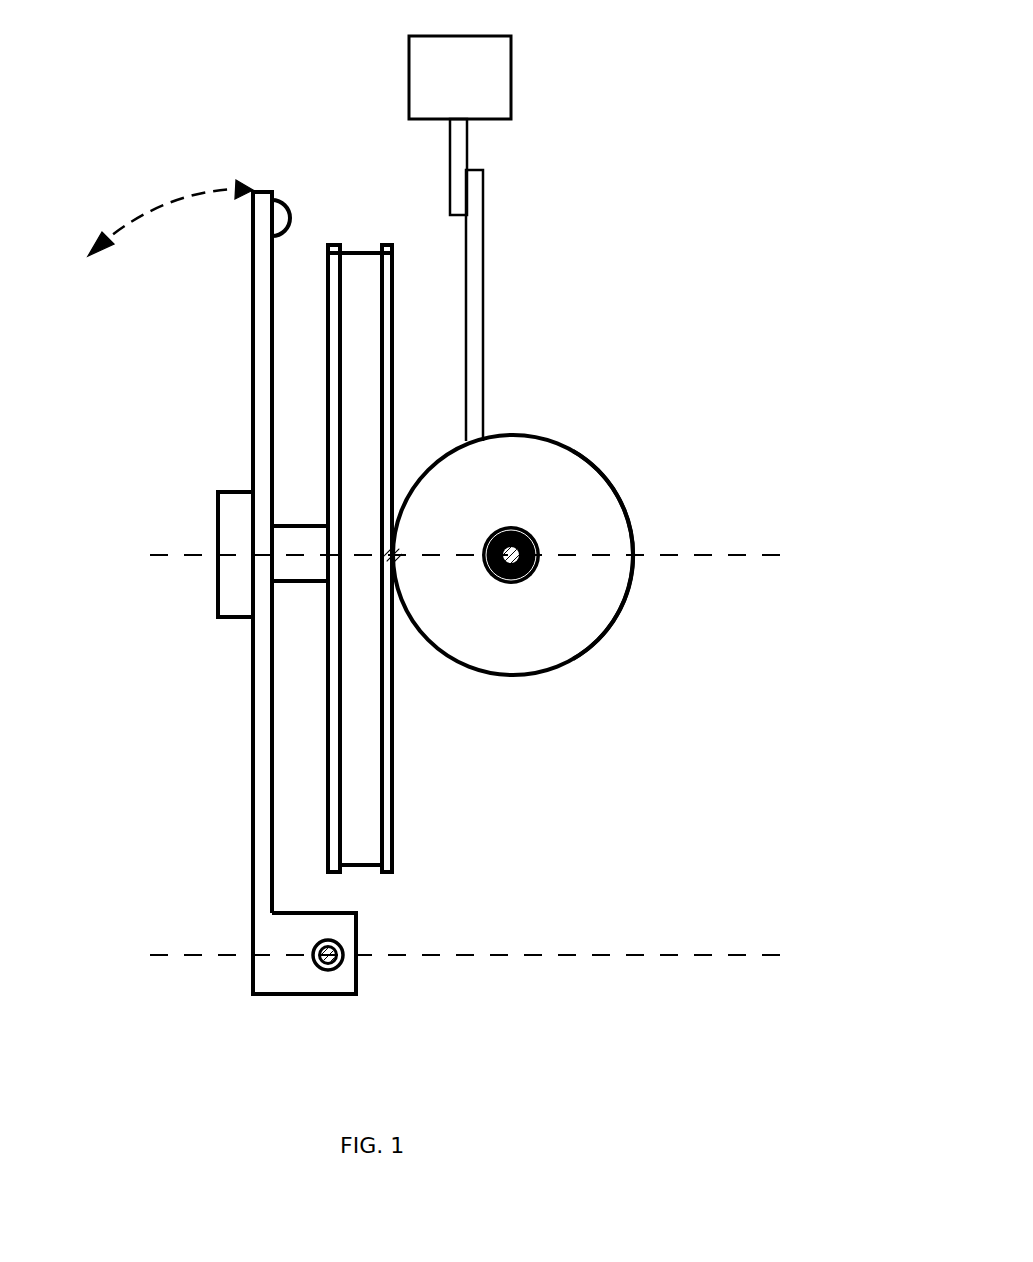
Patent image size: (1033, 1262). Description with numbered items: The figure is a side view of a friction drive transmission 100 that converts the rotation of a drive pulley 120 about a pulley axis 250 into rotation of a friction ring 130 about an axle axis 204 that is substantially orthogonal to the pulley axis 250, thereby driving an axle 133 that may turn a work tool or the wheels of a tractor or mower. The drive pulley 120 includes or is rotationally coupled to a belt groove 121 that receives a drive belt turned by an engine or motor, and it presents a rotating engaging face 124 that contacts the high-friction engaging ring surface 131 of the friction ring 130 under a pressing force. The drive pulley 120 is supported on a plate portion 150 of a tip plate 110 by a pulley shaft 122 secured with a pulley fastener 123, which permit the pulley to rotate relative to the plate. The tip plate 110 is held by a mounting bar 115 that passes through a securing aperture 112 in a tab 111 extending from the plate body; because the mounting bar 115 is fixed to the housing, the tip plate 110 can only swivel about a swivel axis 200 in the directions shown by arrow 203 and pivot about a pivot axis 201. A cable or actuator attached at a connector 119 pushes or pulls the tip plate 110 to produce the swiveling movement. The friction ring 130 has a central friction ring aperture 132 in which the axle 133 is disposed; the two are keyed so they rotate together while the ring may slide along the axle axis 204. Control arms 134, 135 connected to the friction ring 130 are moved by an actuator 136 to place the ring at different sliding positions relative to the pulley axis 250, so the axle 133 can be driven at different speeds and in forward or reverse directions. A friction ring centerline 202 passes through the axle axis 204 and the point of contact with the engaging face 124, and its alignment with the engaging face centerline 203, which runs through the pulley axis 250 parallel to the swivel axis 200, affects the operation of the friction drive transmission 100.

The friction drive transmission 100 is at (200, 101).
The tip plate 110 is at (253, 290).
The tab 111 is at (298, 965).
The securing aperture 112 is at (345, 965).
The mounting bar 115 is at (340, 945).
The connector 119 is at (286, 206).
The drive pulley 120 is at (365, 828).
The belt groove 121 is at (366, 242).
The pulley shaft 122 is at (300, 582).
The pulley fastener 123 is at (232, 542).
The engaging face 124 is at (392, 817).
The friction ring 130 is at (555, 463).
The engaging ring surface 131 is at (632, 588).
The friction ring aperture 132 is at (538, 540).
The axle 133 is at (517, 567).
The control arm 134 is at (483, 233).
The control arm 135 is at (452, 150).
The actuator 136 is at (511, 75).
The plate portion 150 is at (262, 735).
The swivel axis 200 is at (325, 968).
The pivot axis 201 is at (575, 962).
The friction ring centerline 202 is at (748, 558).
The arrow 203 is at (150, 208).
The axle axis 204 is at (500, 524).
The pulley axis 250 is at (308, 552).